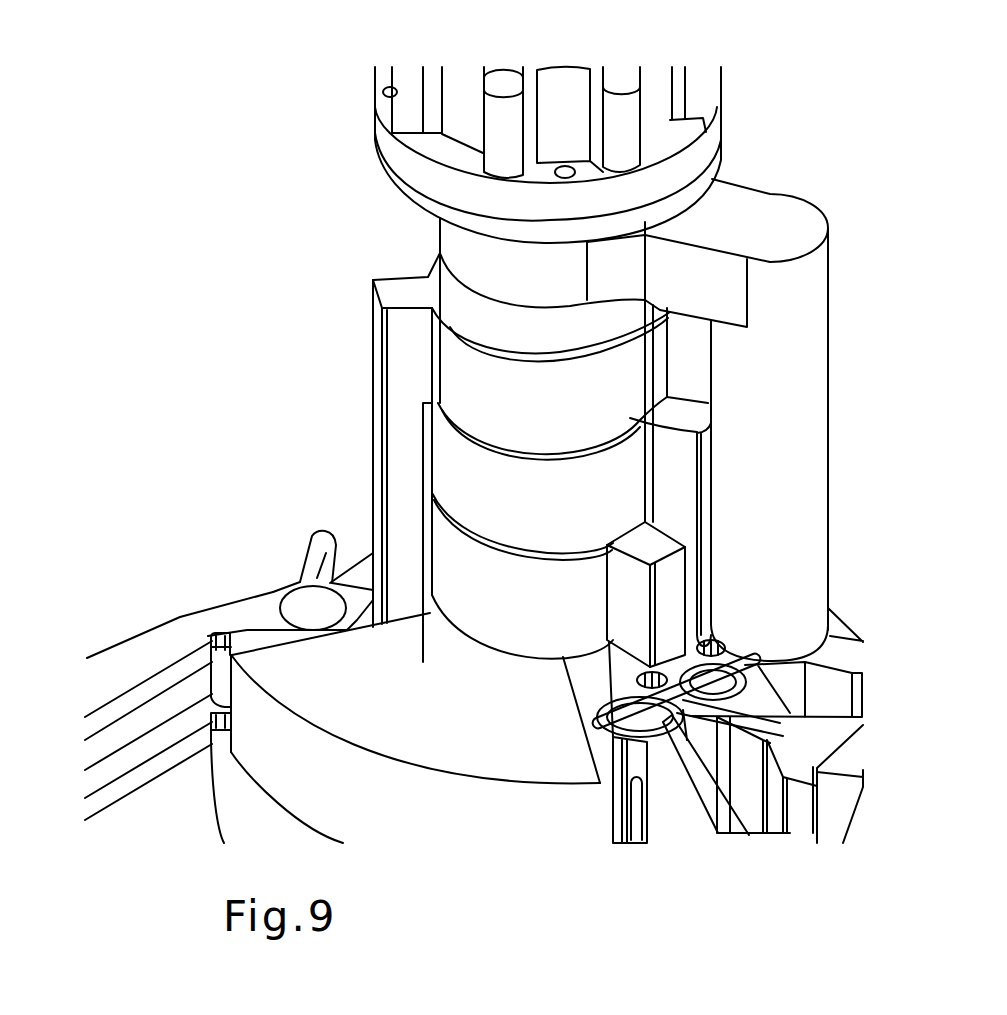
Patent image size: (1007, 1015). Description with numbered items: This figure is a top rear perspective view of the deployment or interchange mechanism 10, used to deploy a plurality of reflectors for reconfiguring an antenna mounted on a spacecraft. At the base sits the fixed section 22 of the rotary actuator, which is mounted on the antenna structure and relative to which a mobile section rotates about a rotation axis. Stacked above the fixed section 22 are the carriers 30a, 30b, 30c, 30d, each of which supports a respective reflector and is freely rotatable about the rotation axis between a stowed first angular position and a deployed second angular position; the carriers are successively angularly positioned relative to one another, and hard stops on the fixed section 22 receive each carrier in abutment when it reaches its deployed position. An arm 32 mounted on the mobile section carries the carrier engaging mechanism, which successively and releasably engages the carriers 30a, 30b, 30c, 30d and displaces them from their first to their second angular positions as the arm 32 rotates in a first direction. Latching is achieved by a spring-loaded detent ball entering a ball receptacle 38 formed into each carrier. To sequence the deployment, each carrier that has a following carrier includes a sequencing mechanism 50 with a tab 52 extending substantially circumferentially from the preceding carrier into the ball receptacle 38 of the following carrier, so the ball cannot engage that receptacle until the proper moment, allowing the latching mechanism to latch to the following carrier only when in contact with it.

The interchange mechanism 10 is at (256, 176).
The fixed section 22 is at (327, 808).
The carrier 30a is at (125, 672).
The carrier 30b is at (837, 653).
The carrier 30c is at (803, 817).
The carrier 30d is at (685, 793).
The arm 32 is at (805, 392).
The ball receptacle 38 is at (281, 578).
The sequencing mechanism 50 is at (627, 735).
The tab 52 is at (299, 608).